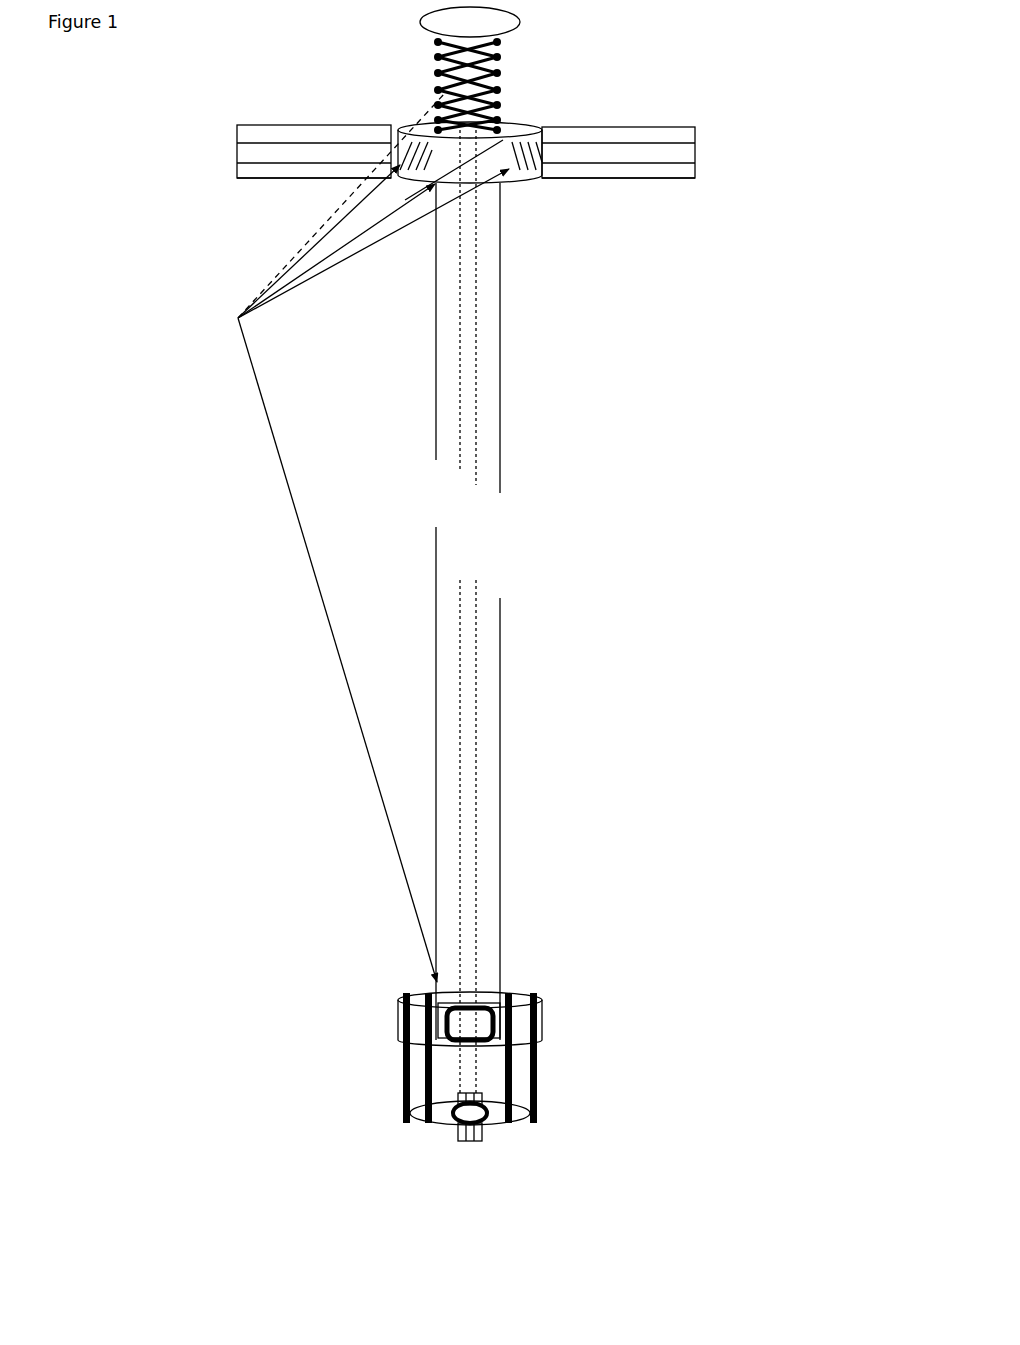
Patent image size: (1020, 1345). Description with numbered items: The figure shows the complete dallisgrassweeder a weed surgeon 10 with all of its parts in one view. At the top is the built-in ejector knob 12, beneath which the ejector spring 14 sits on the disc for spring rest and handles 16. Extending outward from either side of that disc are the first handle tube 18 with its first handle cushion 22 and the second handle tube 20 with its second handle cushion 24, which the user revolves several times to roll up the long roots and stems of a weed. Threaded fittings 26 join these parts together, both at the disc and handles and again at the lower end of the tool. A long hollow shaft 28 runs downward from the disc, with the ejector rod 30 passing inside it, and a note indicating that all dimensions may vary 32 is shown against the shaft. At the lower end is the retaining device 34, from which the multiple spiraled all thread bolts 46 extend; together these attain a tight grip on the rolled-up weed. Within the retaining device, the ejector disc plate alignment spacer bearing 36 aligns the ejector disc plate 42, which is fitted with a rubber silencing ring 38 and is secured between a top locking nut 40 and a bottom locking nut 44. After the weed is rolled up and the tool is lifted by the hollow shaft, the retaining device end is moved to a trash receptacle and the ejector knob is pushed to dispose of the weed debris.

The dallisgrassweeder a weed surgeon 10 is at (461, 601).
The ejector knob 12 is at (627, 37).
The ejector spring 14 is at (421, 93).
The disc for spring rest and handles 16 is at (528, 127).
The first handle tube 18 is at (258, 157).
The second handle tube 20 is at (648, 158).
The first handle cushion 22 is at (268, 181).
The second handle cushion 24 is at (611, 181).
The threaded fittings 26 is at (700, 1128).
The hollow shaft 28 is at (493, 337).
The ejector rod 30 is at (477, 378).
The all dimensions may vary 32 is at (484, 524).
The retaining device 34 is at (404, 991).
The ejector disc plate alignment spacer bearing 36 is at (486, 1009).
The rubber silencing ring 38 is at (451, 1112).
The top locking nut 40 is at (489, 1093).
The ejector disc plate 42 is at (284, 1127).
The bottom locking nut 44 is at (260, 1158).
The multiple spiraled all thread bolts 46 is at (414, 1058).